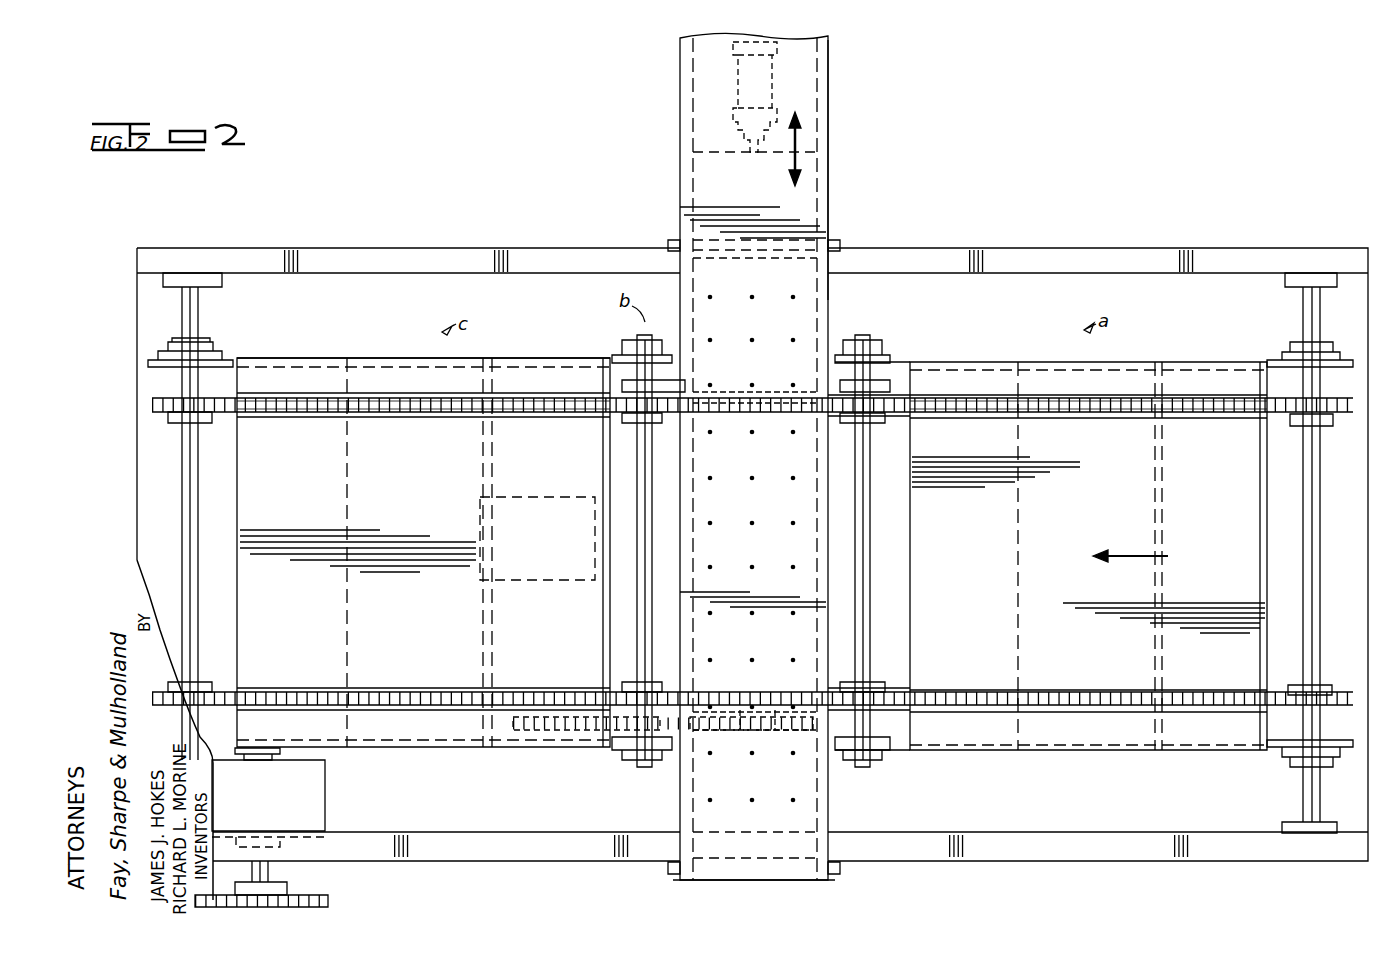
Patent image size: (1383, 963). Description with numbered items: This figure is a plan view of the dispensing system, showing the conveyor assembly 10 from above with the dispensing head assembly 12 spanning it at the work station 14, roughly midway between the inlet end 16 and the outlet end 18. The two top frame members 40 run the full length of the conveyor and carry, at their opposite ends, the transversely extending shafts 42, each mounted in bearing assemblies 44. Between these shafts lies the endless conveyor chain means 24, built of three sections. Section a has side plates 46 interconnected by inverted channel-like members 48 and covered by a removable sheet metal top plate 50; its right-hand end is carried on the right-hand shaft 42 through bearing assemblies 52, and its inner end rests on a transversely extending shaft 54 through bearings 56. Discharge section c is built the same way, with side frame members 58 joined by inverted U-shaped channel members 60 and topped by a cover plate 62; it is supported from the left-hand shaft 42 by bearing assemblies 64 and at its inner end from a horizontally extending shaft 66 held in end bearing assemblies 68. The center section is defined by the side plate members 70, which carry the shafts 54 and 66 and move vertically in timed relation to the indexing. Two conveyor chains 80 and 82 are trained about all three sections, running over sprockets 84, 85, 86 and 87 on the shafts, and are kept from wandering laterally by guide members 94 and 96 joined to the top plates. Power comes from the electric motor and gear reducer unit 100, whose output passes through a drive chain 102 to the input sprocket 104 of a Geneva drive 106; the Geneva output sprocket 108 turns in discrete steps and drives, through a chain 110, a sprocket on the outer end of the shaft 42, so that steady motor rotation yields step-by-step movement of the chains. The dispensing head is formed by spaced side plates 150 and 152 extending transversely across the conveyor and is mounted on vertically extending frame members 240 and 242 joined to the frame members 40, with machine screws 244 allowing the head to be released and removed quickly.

The conveyor assembly 10 is at (1125, 226).
The dispensing head assembly 12 is at (876, 222).
The work station 14 is at (854, 328).
The inlet end 16 is at (1350, 482).
The outlet end 18 is at (128, 396).
The endless conveyor chain means 24 is at (364, 336).
The frame members 40 is at (388, 278).
The transversely extending shafts 42 is at (200, 310).
The bearing assemblies 44 is at (218, 278).
The side plates 46 is at (906, 362).
The inverted channel-like members 48 is at (1155, 472).
The sheet metal top plate 50 is at (996, 360).
The bearing assemblies 52 is at (1280, 350).
The transversely extending shaft 54 is at (866, 532).
The bearings 56 is at (880, 348).
The side frame members 58 is at (232, 360).
The inverted U-shaped channel members 60 is at (348, 518).
The cover plate 62 is at (375, 358).
The bearing assemblies 64 is at (178, 343).
The horizontally extending shaft 66 is at (636, 484).
The end bearing assemblies 68 is at (620, 348).
The side plate members 70 is at (718, 393).
The conveyor chain 80 is at (912, 420).
The conveyor chain 82 is at (930, 690).
The sprockets 84 is at (1290, 428).
The sprockets 85 is at (870, 424).
The sprockets 86 is at (628, 424).
The sprockets 87 is at (200, 423).
The guide member 94 is at (388, 690).
The guide member 96 is at (378, 422).
The electric motor and gear reducer unit 100 is at (475, 640).
The drive chain 102 is at (448, 748).
The input sprocket 104 is at (325, 755).
The Geneva drive 106 is at (325, 798).
The output sprocket 108 is at (290, 895).
The chain 110 is at (290, 905).
The side plate 150 is at (680, 172).
The side plate 152 is at (830, 172).
The vertically extending frame member 240 is at (805, 256).
The vertically extending frame member 242 is at (715, 882).
The machine screws 244 is at (668, 246).